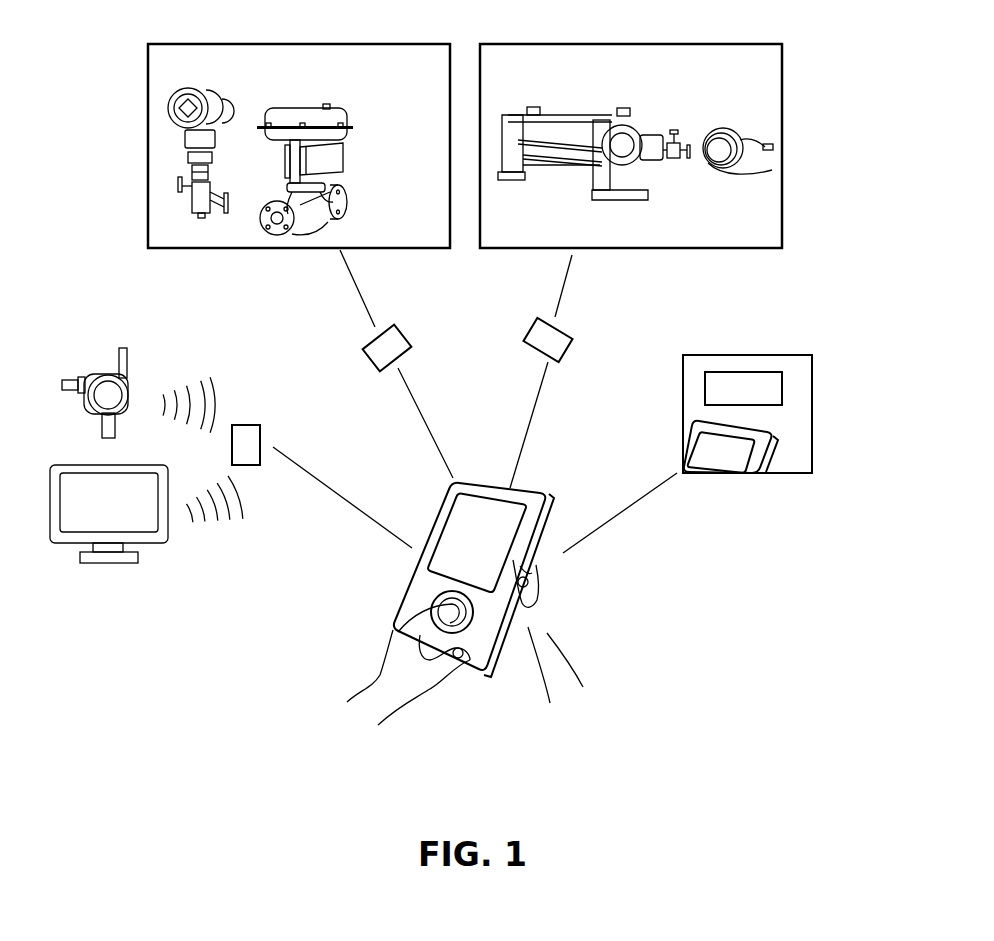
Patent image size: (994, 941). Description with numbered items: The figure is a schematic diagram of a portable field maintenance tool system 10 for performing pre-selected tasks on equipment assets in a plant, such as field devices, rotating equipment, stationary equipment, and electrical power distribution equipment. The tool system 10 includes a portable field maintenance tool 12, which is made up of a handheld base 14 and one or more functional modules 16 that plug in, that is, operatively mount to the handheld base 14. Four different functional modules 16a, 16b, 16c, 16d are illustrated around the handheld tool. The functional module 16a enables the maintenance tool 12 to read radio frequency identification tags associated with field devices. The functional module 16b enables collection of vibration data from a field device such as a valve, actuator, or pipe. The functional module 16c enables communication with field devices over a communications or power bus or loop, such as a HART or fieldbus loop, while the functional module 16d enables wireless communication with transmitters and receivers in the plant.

The portable field maintenance tool system 10 is at (696, 643).
The portable field maintenance tool 12 is at (452, 626).
The handheld base 14 is at (402, 592).
The functional modules 16 is at (543, 488).
The functional module 16a is at (742, 372).
The functional module 16b is at (565, 328).
The functional module 16c is at (400, 329).
The functional module 16d is at (248, 425).